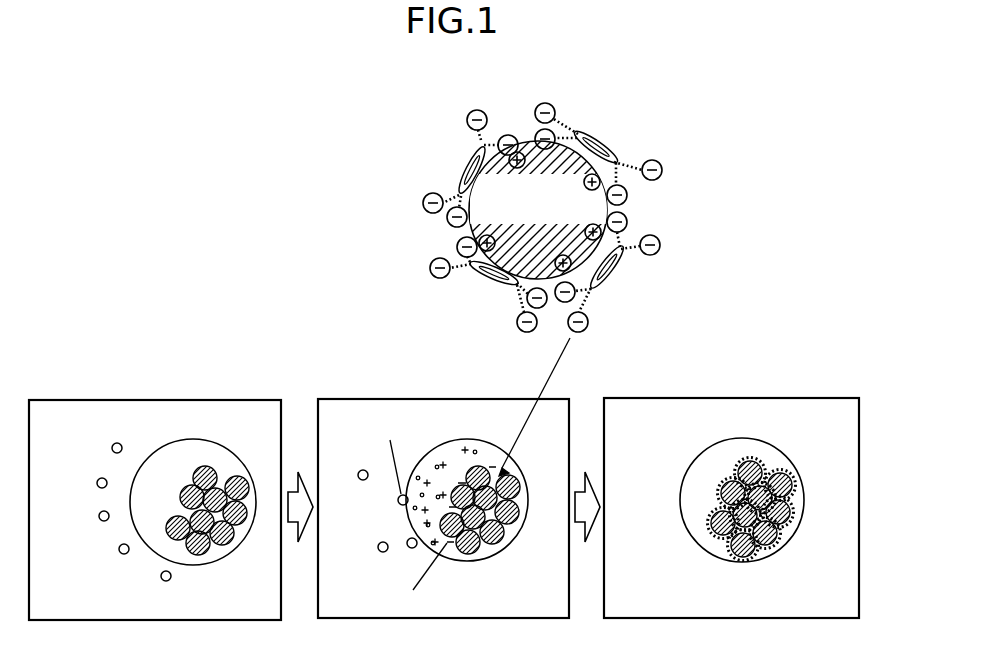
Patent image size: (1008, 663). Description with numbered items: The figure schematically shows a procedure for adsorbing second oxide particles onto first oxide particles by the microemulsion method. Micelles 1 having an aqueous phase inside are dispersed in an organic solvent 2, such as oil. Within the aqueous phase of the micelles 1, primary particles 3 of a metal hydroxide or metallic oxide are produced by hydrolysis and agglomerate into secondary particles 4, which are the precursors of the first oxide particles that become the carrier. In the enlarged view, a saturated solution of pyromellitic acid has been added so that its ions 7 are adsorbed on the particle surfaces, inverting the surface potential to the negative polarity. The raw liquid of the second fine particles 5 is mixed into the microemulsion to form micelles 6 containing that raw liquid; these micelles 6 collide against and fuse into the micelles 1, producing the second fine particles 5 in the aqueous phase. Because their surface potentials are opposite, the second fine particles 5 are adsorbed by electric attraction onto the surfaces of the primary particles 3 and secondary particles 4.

The micelles 1 is at (193, 443).
The organic solvent 2 is at (132, 405).
The primary particles 3 is at (530, 150).
The secondary particles 4 is at (215, 557).
The second fine particles 5 is at (435, 465).
The micelles containing raw liquid 6 is at (124, 556).
The ions 7 is at (467, 158).